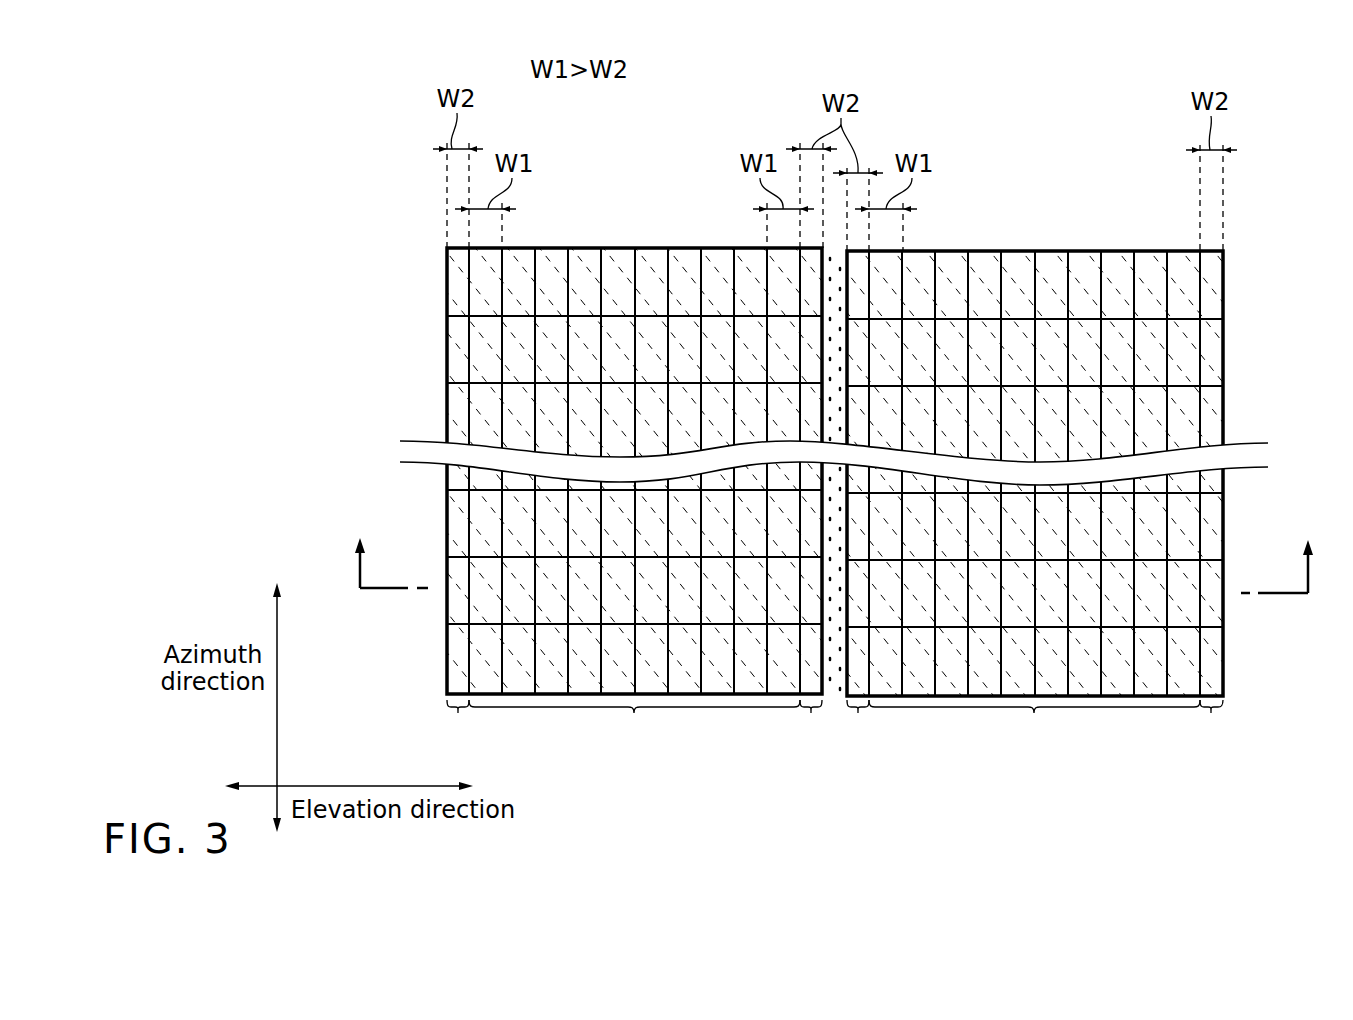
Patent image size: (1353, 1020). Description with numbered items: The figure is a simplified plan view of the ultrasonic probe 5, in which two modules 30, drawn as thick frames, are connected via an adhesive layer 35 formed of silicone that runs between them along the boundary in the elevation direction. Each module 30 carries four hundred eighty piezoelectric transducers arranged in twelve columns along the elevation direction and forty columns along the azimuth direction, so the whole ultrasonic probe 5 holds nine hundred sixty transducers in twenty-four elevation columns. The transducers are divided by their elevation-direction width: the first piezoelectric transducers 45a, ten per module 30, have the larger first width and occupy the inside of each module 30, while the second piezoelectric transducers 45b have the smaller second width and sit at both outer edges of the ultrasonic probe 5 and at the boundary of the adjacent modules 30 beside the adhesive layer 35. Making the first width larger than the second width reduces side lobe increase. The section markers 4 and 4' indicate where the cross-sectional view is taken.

The ultrasonic probe 5 is at (721, 421).
The module 30 is at (656, 220).
The adhesive layer 35 is at (831, 697).
The first piezoelectric transducer 45a is at (834, 725).
The second piezoelectric transducer 45b is at (832, 725).
The section line 4 is at (378, 560).
The section line 4' is at (1289, 563).